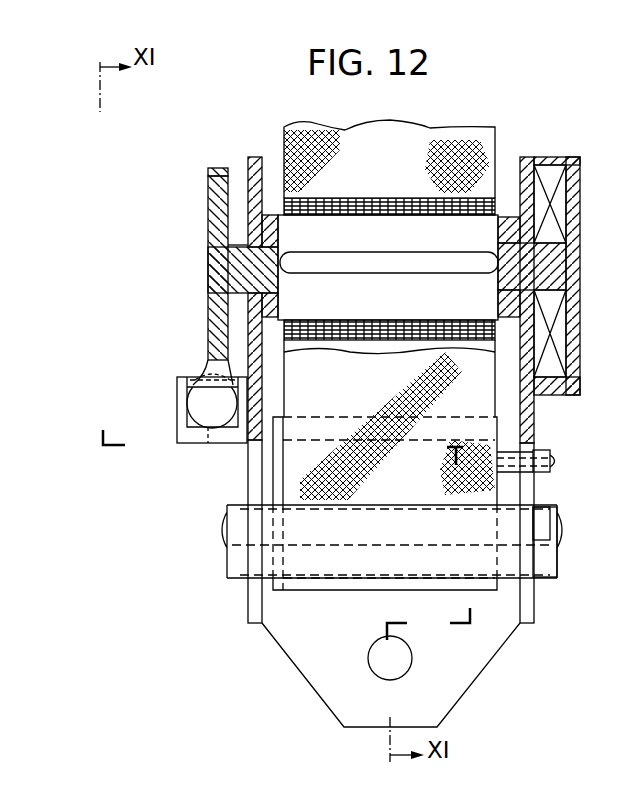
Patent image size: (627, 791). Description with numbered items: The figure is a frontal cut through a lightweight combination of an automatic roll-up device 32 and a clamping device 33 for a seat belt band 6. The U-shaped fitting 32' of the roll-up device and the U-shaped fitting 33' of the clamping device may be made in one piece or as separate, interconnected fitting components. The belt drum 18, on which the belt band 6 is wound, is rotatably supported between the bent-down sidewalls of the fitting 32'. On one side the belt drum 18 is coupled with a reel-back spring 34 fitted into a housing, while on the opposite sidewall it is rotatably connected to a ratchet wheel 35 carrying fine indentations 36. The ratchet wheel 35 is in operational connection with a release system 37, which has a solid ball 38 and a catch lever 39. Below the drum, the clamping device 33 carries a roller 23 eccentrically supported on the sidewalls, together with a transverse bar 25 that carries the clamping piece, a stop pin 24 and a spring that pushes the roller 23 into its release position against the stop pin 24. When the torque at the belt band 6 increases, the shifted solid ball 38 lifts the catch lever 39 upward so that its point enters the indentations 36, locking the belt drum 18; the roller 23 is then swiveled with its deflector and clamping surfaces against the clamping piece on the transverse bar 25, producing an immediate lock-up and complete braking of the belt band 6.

The belt band 6 is at (434, 135).
The belt drum 18 is at (487, 225).
The roller 23 is at (268, 480).
The stop pin 24 is at (557, 461).
The transverse bar 25 is at (545, 567).
The automatic roll-up device 32 is at (205, 327).
The U-shaped fitting 32' is at (242, 184).
The clamping device 33 is at (345, 541).
The U-shaped fitting 33' is at (364, 583).
The reel-back spring 34 is at (557, 205).
The ratchet wheel 35 is at (222, 212).
The fine indentations 36 is at (218, 170).
The release system 37 is at (168, 390).
The solid ball 38 is at (200, 413).
The catch lever 39 is at (212, 372).